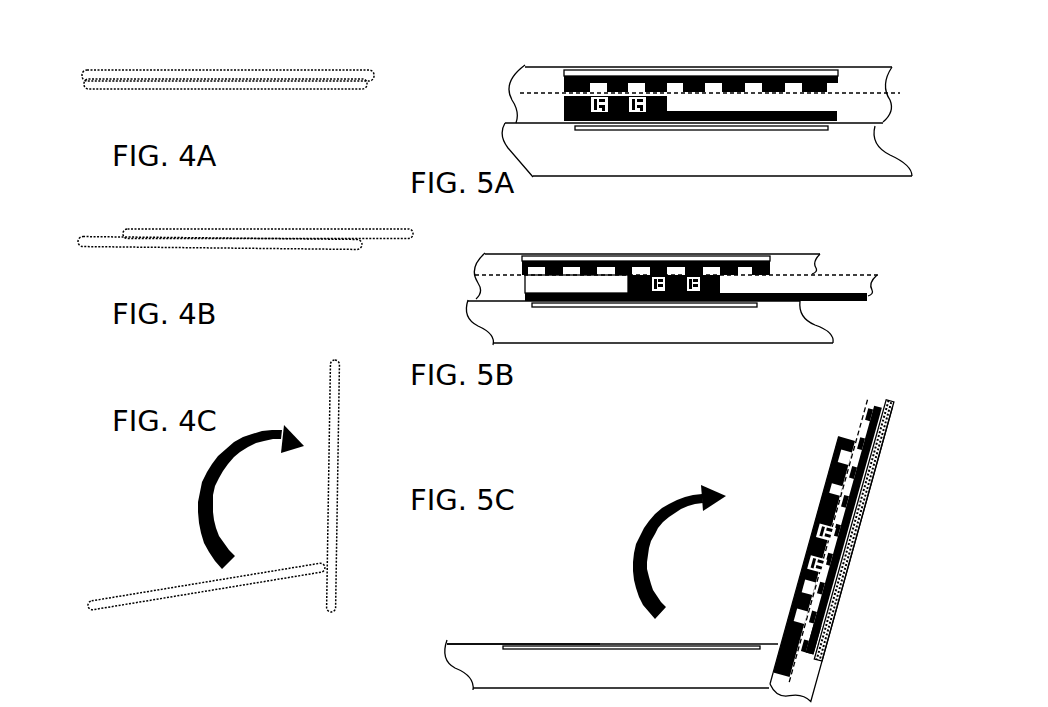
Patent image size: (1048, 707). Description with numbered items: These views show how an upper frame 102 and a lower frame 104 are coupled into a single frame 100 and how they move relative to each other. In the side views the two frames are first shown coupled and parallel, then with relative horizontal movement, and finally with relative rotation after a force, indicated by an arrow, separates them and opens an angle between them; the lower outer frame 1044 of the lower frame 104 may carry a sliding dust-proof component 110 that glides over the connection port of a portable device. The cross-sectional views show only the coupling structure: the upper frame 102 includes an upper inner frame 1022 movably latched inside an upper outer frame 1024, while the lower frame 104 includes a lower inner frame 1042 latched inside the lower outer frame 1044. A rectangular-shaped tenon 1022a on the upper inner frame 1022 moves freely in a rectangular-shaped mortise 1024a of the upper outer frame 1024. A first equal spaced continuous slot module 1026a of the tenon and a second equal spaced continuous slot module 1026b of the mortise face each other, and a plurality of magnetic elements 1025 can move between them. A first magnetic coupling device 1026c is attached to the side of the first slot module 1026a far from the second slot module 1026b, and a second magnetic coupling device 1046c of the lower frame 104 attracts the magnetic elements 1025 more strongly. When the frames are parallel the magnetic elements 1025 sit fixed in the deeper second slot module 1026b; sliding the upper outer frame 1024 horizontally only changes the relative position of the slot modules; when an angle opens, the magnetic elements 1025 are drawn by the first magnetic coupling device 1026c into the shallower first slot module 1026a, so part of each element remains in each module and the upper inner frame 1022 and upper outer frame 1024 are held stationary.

In FIG. 4C, the frame 100 is at (213, 530).
In FIG. 4A, the upper frame 102 is at (276, 60).
In FIG. 4B, the upper frame 102 is at (141, 220).
In FIG. 4C, the upper frame 102 is at (323, 386).
In FIG. 5A, the upper frame 102 is at (495, 63).
In FIG. 5B, the upper frame 102 is at (465, 253).
In FIG. 4A, the lower frame 104 is at (130, 88).
In FIG. 4B, the lower frame 104 is at (126, 260).
In FIG. 4C, the lower frame 104 is at (149, 583).
In FIG. 5A, the lower frame 104 is at (913, 123).
In FIG. 5B, the lower frame 104 is at (847, 299).
In FIG. 5C, the lower frame 104 is at (523, 540).
In FIG. 4A, the sliding dust-proof component 110 is at (370, 84).
In FIG. 5A, the upper inner frame 1022 is at (903, 70).
In FIG. 5B, the upper inner frame 1022 is at (832, 255).
In FIG. 5C, the upper inner frame 1022 is at (819, 669).
In FIG. 5C, the rectangular-shaped tenon 1022a is at (840, 593).
In FIG. 5A, the upper outer frame 1024 is at (903, 98).
In FIG. 5B, the upper outer frame 1024 is at (882, 277).
In FIG. 5C, the upper outer frame 1024 is at (826, 455).
In FIG. 5C, the rectangular-shaped mortise 1024a is at (808, 532).
In FIG. 5A, the magnetic elements 1025 is at (637, 113).
In FIG. 5B, the magnetic elements 1025 is at (692, 291).
In FIG. 5C, the magnetic elements 1025 is at (850, 548).
In FIG. 5A, the first equal spaced continuous slot module 1026a is at (847, 77).
In FIG. 5B, the first equal spaced continuous slot module 1026a is at (800, 245).
In FIG. 5C, the first equal spaced continuous slot module 1026a is at (796, 621).
In FIG. 5A, the second equal spaced continuous slot module 1026b is at (559, 86).
In FIG. 5B, the second equal spaced continuous slot module 1026b is at (611, 296).
In FIG. 5C, the second equal spaced continuous slot module 1026b is at (816, 503).
In FIG. 5A, the first magnetic coupling device 1026c is at (591, 70).
In FIG. 5B, the first magnetic coupling device 1026c is at (563, 257).
In FIG. 5C, the first magnetic coupling device 1026c is at (836, 617).
In FIG. 5C, the lower inner frame 1042 is at (558, 646).
In FIG. 5C, the lower outer frame 1044 is at (490, 644).
In FIG. 5A, the second magnetic coupling device 1046c is at (736, 131).
In FIG. 5B, the second magnetic coupling device 1046c is at (737, 306).
In FIG. 5C, the second magnetic coupling device 1046c is at (617, 651).